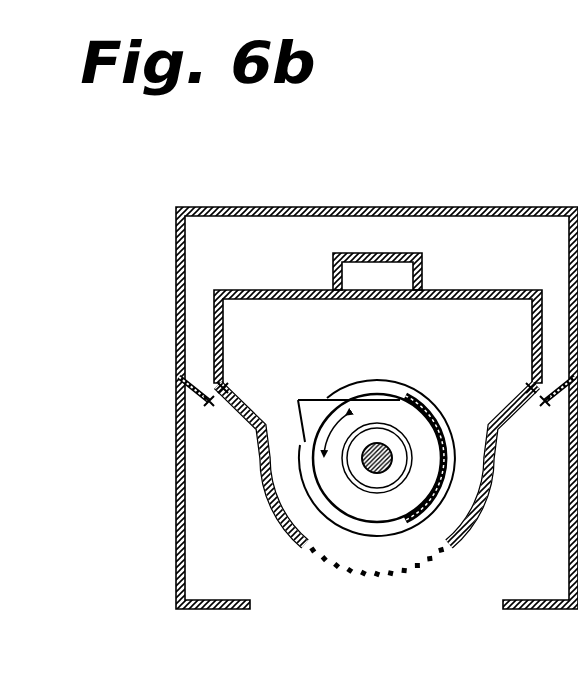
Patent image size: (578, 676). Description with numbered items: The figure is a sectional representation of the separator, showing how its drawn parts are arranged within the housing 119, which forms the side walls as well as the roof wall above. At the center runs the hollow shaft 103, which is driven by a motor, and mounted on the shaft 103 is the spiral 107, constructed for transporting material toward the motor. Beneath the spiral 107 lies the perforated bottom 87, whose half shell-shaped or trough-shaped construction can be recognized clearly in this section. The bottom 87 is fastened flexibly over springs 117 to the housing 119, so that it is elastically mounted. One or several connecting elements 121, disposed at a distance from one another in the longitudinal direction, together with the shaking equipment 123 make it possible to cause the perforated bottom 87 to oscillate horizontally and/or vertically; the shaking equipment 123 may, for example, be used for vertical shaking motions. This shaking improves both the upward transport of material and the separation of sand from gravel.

The perforated bottom 87 is at (398, 580).
The hollow shaft 103 is at (380, 450).
The spiral 107 is at (340, 518).
The springs 117 is at (203, 468).
The housing 119 is at (198, 207).
The connecting elements 121 is at (482, 290).
The shaking equipment 123 is at (330, 262).